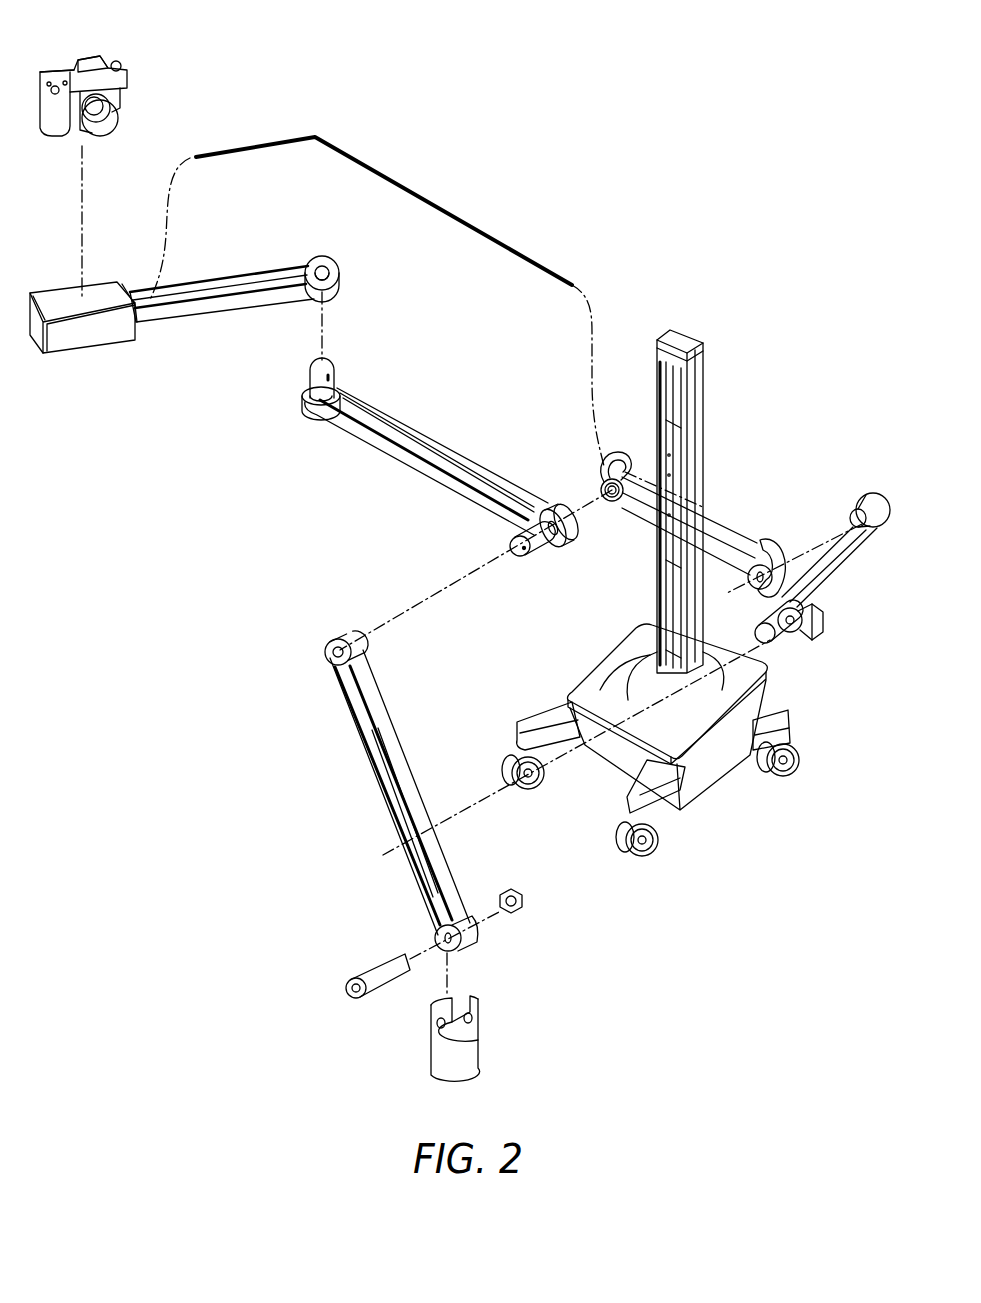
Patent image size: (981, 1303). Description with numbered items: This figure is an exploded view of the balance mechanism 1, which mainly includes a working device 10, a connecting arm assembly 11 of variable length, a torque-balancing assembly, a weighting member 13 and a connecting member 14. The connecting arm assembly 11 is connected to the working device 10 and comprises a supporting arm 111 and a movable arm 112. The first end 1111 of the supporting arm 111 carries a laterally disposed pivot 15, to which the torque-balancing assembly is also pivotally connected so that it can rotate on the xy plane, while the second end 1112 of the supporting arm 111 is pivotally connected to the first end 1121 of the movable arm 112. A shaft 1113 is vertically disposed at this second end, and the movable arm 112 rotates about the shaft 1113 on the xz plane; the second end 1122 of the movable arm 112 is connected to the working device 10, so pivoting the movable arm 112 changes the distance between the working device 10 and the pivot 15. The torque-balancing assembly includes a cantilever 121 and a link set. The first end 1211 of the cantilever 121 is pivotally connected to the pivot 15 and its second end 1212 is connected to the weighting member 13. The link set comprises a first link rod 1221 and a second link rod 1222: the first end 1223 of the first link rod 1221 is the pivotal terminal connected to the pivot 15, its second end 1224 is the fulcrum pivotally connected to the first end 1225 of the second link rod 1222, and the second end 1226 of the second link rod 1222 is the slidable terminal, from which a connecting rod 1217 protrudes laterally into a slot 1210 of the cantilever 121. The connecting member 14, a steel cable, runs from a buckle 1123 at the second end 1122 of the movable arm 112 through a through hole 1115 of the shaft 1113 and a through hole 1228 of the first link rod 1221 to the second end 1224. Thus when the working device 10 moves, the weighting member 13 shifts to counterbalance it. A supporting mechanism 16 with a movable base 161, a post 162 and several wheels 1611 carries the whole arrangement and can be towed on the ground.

The balance mechanism 1 is at (817, 247).
The working device 10 is at (133, 69).
The connecting arm assembly 11 is at (399, 435).
The supporting arm 111 is at (438, 445).
The first end of the supporting arm 1111 is at (522, 512).
The second end of the supporting arm 1112 is at (303, 410).
The shaft 1113 is at (312, 377).
The through hole of the shaft 1115 is at (331, 377).
The movable arm 112 is at (184, 299).
The first end of the movable arm 1121 is at (322, 266).
The second end of the movable arm 1122 is at (112, 297).
The buckle 1123 is at (132, 306).
The cantilever 121 is at (396, 814).
The slot 1210 is at (384, 778).
The first end of the cantilever 1211 is at (324, 652).
The second end of the cantilever 1212 is at (468, 942).
The connecting rod 1217 is at (782, 630).
The first link rod 1221 is at (677, 475).
The second link rod 1222 is at (836, 558).
The first end of the first link rod 1223 is at (602, 470).
The second end of the first link rod 1224 is at (780, 566).
The first end of the second link rod 1225 is at (868, 494).
The second end of the second link rod 1226 is at (818, 627).
The through hole of the first link rod 1228 is at (624, 458).
The weighting member 13 is at (470, 1062).
The connecting member 14 is at (420, 196).
The pivot 15 is at (510, 547).
The supporting mechanism 16 is at (650, 605).
The movable base 161 is at (588, 694).
The wheels 1611 is at (656, 850).
The post 162 is at (656, 581).